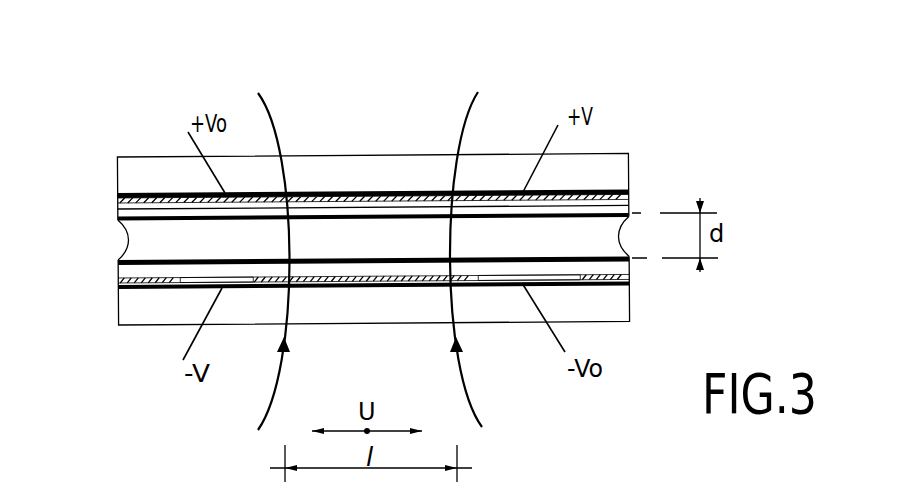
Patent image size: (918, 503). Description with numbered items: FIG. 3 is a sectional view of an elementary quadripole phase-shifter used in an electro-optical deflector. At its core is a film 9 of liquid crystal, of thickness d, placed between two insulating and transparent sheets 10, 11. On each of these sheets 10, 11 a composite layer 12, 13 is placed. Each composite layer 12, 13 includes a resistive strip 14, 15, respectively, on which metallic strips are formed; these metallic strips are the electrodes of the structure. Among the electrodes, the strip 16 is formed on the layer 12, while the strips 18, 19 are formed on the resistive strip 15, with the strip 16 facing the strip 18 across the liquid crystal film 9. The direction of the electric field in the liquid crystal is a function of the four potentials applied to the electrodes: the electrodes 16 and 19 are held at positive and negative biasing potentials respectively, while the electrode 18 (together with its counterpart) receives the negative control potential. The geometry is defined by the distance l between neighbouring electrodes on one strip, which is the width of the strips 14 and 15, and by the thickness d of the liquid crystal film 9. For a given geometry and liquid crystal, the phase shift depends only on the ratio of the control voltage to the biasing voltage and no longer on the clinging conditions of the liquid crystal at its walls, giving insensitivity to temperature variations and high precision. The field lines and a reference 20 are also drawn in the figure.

The film of liquid crystal 9 is at (132, 238).
The insulating and transparent sheet 10 is at (118, 210).
The insulating and transparent sheet 11 is at (118, 272).
The composite layer 12 is at (117, 197).
The composite layer 13 is at (120, 277).
The resistive strip 14 is at (378, 192).
The resistive strip 15 is at (360, 288).
The metallic strip 16 is at (192, 193).
The metallic strip 18 is at (250, 288).
The metallic strip 19 is at (510, 286).
The electric field lines 20 is at (333, 145).